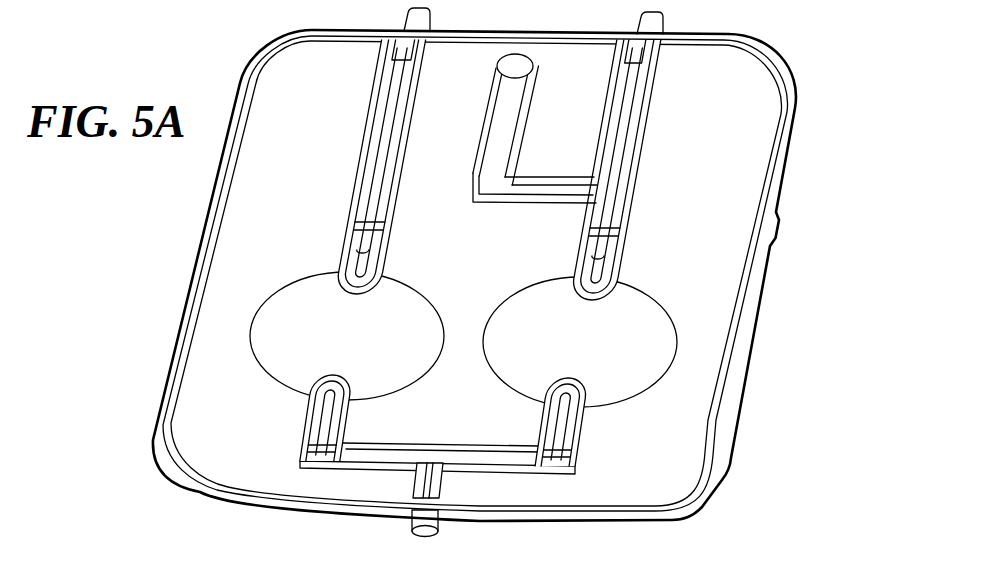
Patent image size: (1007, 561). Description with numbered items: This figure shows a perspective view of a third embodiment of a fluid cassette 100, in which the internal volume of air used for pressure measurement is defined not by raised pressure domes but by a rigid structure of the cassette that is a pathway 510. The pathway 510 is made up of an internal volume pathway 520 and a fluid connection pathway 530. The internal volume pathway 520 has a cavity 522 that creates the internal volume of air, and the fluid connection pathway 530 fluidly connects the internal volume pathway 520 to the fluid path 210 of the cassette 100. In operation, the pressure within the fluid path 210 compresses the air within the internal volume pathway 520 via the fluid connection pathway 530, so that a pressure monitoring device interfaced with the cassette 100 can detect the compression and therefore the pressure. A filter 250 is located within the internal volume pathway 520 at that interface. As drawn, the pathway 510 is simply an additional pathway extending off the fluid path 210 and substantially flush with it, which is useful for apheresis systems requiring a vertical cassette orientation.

The cassette 100 is at (693, 503).
The fluid path 210 is at (625, 131).
The filter 250 is at (522, 64).
The pathway 510 is at (492, 108).
The internal volume pathway 520 is at (493, 184).
The cavity 522 is at (502, 148).
The fluid connection pathway 530 is at (558, 188).